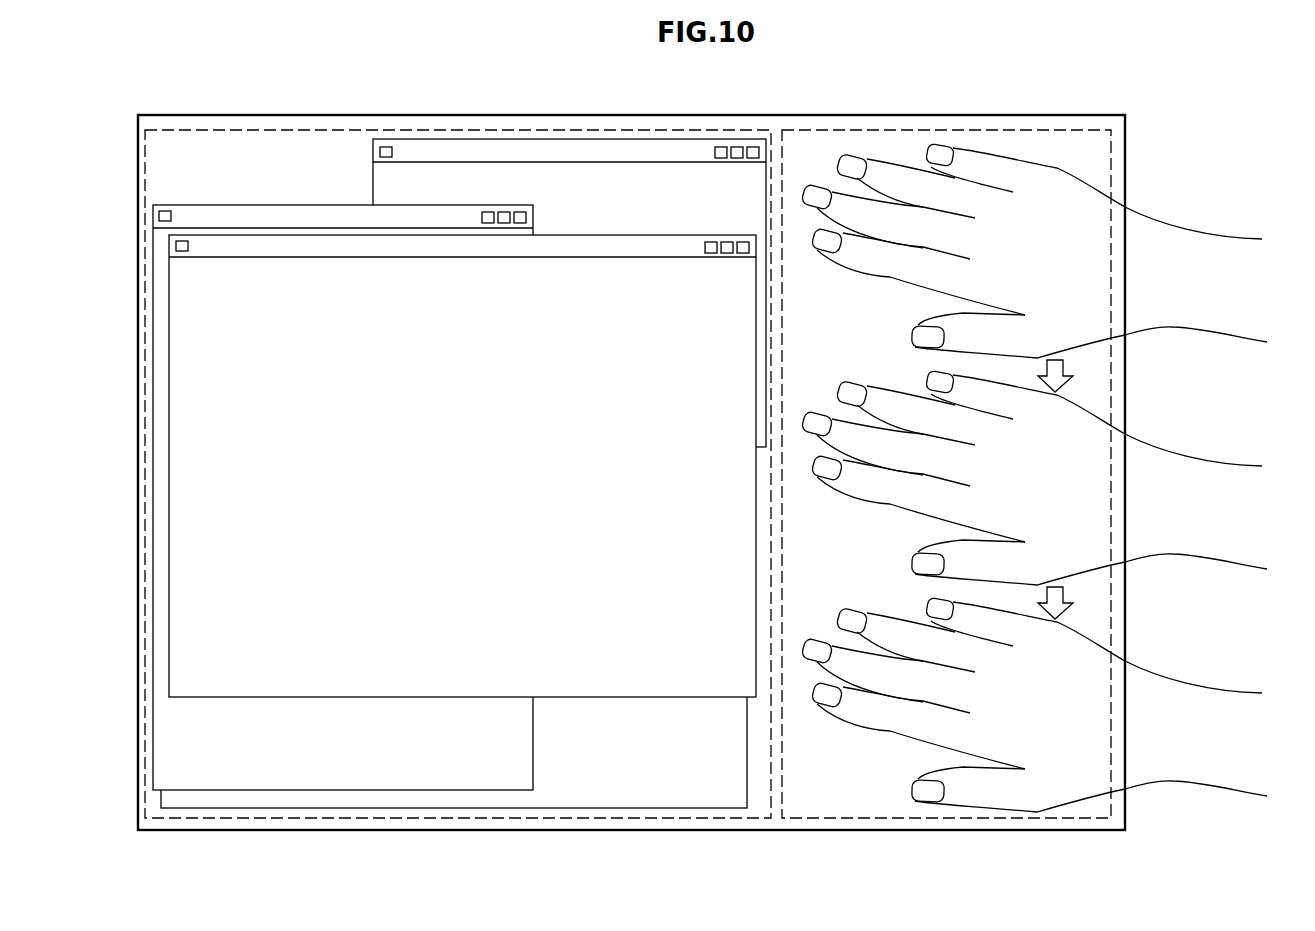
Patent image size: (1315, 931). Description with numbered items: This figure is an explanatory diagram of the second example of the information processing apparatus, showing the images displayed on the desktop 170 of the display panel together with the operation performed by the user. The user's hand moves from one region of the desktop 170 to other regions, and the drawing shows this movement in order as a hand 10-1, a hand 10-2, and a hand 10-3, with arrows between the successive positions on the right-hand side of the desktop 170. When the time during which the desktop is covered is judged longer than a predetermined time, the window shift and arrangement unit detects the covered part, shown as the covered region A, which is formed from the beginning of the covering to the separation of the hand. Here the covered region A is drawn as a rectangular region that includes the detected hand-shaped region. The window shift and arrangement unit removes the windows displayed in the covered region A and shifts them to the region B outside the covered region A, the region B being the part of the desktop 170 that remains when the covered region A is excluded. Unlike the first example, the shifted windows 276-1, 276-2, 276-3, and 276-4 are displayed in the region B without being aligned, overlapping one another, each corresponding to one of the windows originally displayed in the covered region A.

The desktop 170 is at (581, 115).
The covered region A is at (945, 130).
The region outside the covered region B is at (307, 118).
The window 276-1 is at (621, 235).
The window 276-2 is at (235, 205).
The window 276-3 is at (465, 139).
The window 276-4 is at (590, 810).
The hand 10-1 is at (1197, 230).
The hand 10-2 is at (1197, 457).
The hand 10-3 is at (1197, 684).